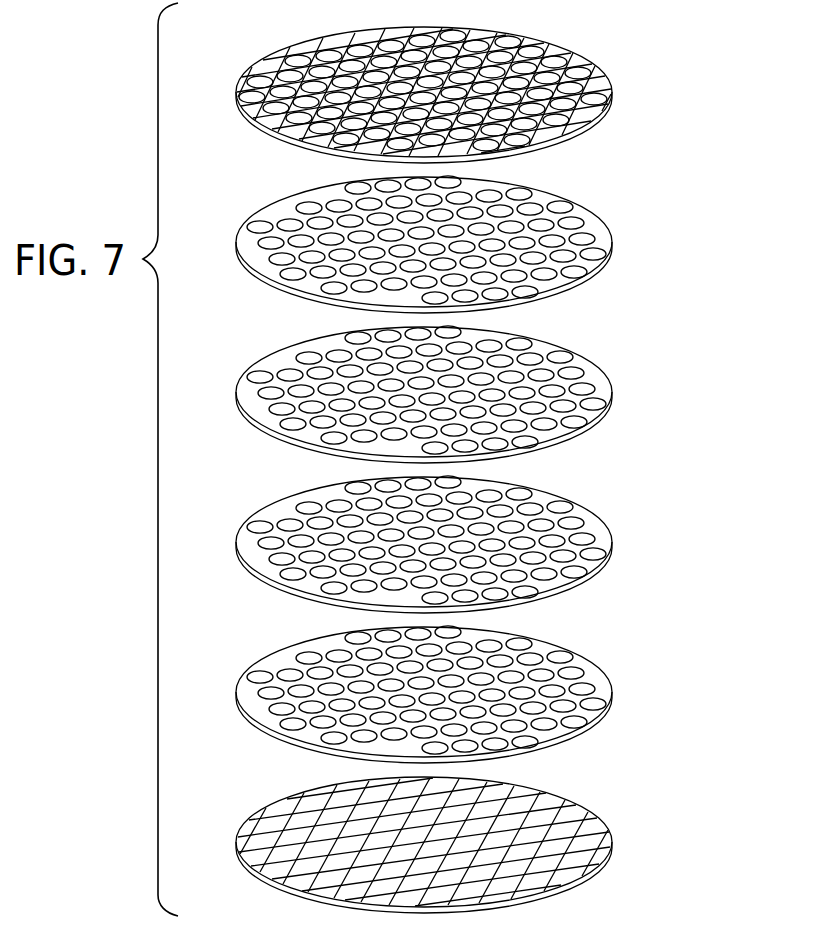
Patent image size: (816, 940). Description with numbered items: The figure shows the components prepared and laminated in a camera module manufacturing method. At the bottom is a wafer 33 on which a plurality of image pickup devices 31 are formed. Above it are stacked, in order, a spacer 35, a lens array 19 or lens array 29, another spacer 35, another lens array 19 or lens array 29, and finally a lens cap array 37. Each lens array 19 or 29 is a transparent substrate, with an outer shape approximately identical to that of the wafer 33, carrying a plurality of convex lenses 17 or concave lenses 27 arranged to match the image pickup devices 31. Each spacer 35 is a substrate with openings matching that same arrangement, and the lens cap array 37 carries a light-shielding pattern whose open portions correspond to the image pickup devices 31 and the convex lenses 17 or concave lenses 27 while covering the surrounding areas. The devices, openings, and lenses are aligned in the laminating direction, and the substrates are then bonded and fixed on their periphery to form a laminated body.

The convex lens 17 is at (455, 375).
The concave lens 27 is at (533, 209).
The lens array 19 is at (501, 395).
The lens array 29 is at (612, 237).
The image pickup device 31 is at (309, 808).
The wafer 33 is at (606, 824).
The spacer 35 is at (611, 391).
The lens cap array 37 is at (601, 70).